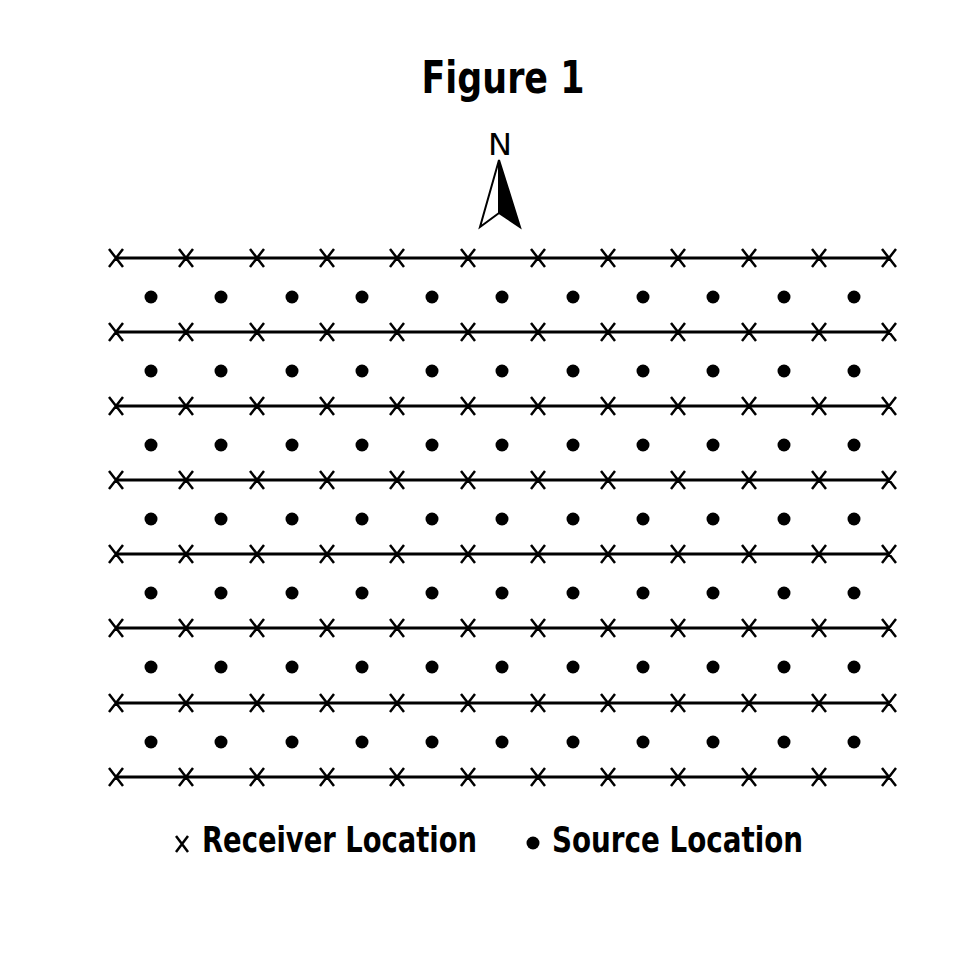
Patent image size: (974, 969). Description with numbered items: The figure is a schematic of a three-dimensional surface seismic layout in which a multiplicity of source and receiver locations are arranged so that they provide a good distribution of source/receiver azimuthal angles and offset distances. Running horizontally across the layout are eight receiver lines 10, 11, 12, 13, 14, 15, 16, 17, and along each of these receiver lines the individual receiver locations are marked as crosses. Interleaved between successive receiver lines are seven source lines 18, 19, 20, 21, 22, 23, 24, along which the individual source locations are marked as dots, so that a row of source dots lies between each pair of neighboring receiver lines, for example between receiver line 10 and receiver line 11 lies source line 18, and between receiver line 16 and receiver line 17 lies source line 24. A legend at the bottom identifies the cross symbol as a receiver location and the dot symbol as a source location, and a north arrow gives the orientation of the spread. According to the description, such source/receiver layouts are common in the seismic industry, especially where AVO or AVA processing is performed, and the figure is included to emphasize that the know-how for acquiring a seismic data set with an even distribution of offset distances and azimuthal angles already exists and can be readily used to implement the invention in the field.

The receiver line 10 is at (526, 256).
The receiver line 11 is at (528, 330).
The receiver line 12 is at (526, 404).
The receiver line 13 is at (526, 478).
The receiver line 14 is at (522, 552).
The receiver line 15 is at (522, 626).
The receiver line 16 is at (522, 701).
The receiver line 17 is at (526, 775).
The source line 18 is at (523, 298).
The source line 19 is at (523, 372).
The source line 20 is at (525, 446).
The source line 21 is at (525, 520).
The source line 22 is at (525, 594).
The source line 23 is at (525, 668).
The source line 24 is at (525, 743).